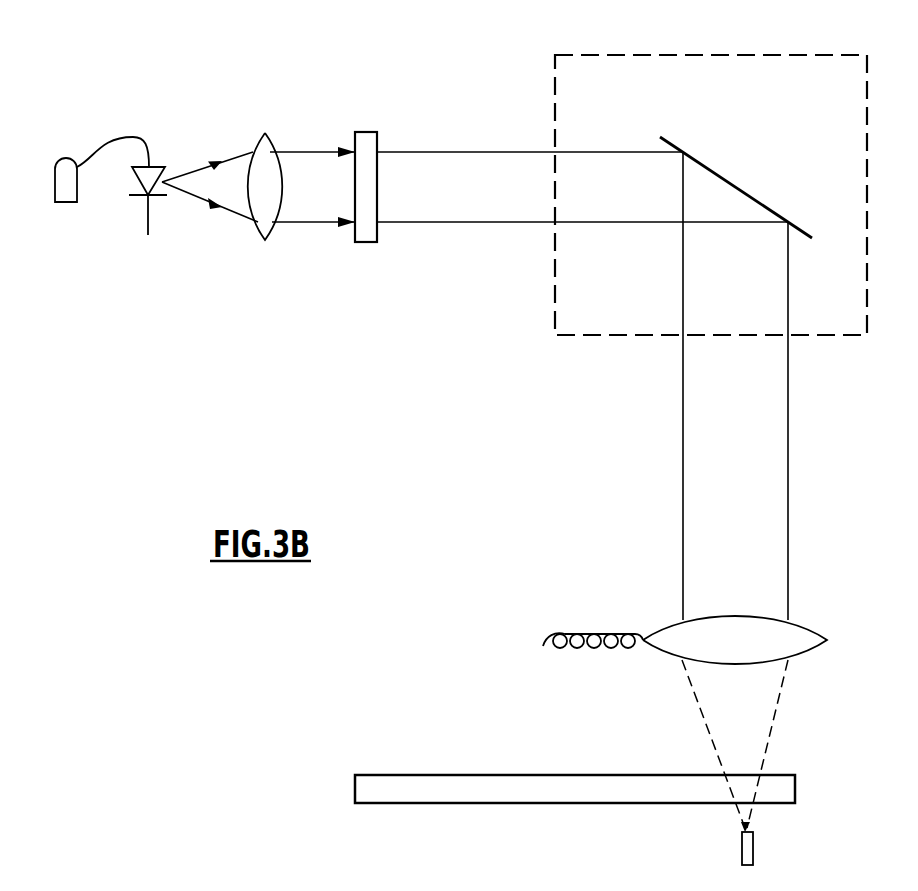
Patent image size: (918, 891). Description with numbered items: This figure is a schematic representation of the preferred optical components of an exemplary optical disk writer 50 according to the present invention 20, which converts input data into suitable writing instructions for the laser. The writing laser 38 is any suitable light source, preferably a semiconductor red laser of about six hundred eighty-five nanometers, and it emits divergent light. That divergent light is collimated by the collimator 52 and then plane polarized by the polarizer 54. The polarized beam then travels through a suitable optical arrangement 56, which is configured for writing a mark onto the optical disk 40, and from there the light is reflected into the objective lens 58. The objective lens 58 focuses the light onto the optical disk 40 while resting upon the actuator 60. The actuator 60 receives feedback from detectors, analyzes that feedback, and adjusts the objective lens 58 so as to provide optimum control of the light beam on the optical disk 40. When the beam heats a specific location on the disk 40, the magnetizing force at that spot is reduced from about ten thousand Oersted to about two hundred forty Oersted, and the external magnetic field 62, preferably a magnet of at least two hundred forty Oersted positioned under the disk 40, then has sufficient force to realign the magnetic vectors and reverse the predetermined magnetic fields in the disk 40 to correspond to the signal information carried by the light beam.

The present invention 20 is at (66, 202).
The writing laser 38 is at (134, 210).
The optical disk 40 is at (672, 805).
The optical disk writer 50 is at (428, 113).
The collimator 52 is at (258, 228).
The polarizer 54 is at (367, 243).
The optical arrangement 56 is at (750, 65).
The objective lens 58 is at (792, 632).
The actuator 60 is at (587, 628).
The external magnetic field 62 is at (754, 849).